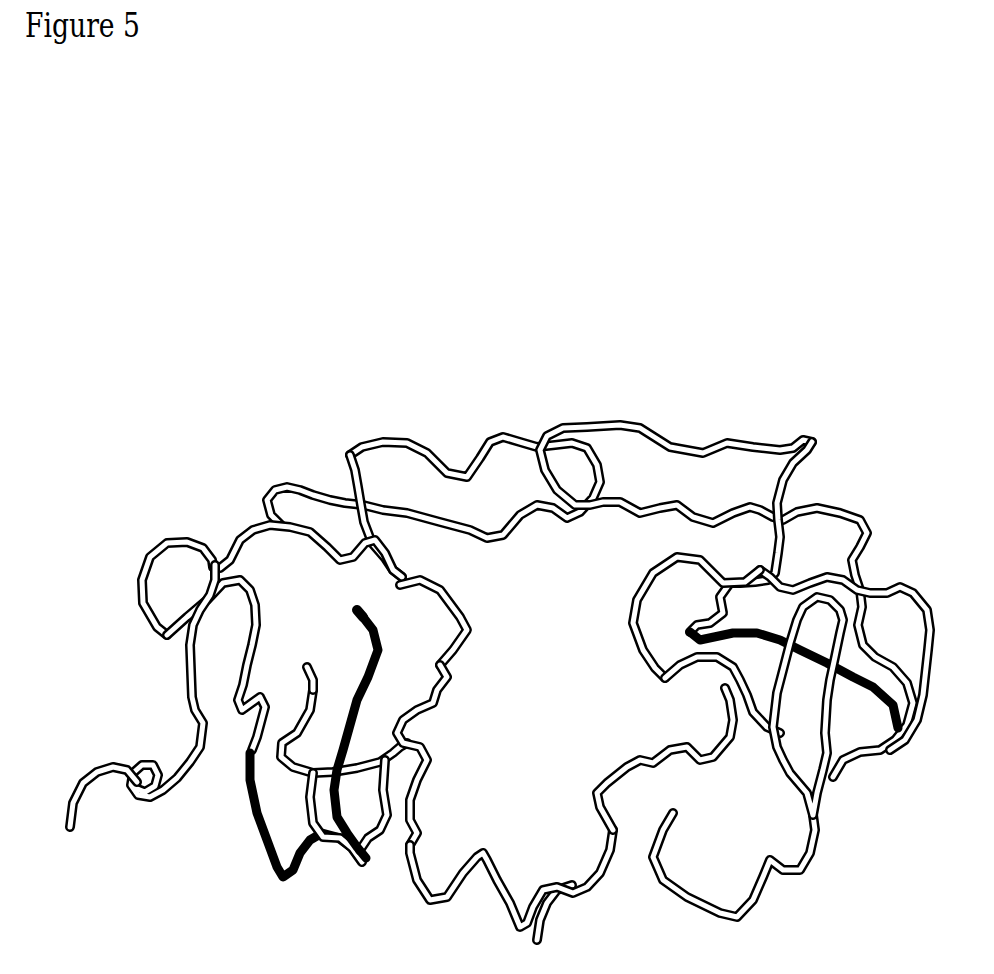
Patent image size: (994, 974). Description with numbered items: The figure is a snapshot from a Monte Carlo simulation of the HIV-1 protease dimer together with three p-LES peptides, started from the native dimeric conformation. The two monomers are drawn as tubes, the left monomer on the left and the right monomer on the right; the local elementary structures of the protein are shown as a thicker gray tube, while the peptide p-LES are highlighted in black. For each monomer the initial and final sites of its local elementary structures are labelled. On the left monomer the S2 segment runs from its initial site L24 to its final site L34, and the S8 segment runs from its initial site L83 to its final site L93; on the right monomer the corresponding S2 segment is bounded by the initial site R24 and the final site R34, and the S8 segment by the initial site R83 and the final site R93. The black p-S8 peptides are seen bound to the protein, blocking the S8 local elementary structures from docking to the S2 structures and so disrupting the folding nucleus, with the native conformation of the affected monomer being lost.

The final site of segment 24-34 (S2) of the left monomer L34 is at (400, 719).
The initial site of segment 83-93 (S8) of the left monomer L83 is at (436, 755).
The initial site of segment 24-34 (S2) of the left monomer L24 is at (157, 696).
The final site of segment 83-93 (S8) of the left monomer L93 is at (511, 878).
The final site of segment 24-34 (S2) of the right monomer R34 is at (765, 642).
The initial site of segment 83-93 (S8) of the right monomer R83 is at (722, 695).
The final site of segment 83-93 (S8) of the right monomer R93 is at (647, 759).
The initial site of segment 24-34 (S2) of the right monomer R24 is at (817, 706).